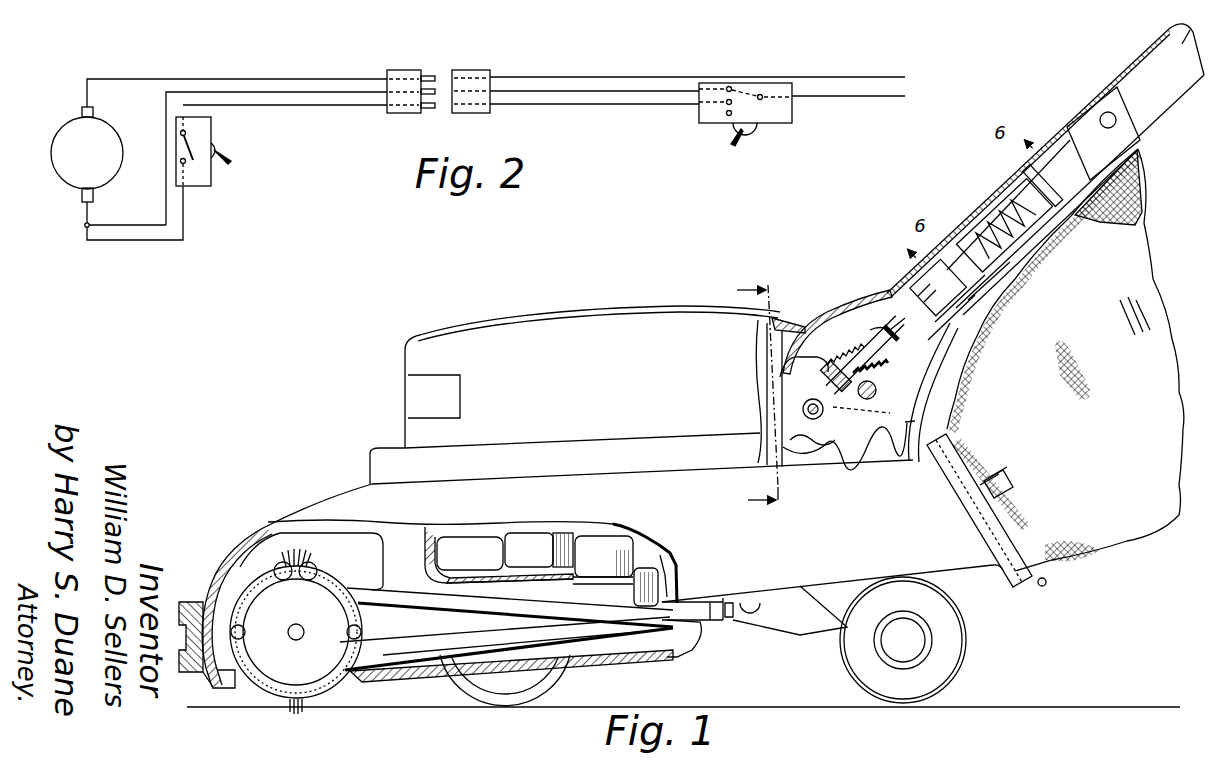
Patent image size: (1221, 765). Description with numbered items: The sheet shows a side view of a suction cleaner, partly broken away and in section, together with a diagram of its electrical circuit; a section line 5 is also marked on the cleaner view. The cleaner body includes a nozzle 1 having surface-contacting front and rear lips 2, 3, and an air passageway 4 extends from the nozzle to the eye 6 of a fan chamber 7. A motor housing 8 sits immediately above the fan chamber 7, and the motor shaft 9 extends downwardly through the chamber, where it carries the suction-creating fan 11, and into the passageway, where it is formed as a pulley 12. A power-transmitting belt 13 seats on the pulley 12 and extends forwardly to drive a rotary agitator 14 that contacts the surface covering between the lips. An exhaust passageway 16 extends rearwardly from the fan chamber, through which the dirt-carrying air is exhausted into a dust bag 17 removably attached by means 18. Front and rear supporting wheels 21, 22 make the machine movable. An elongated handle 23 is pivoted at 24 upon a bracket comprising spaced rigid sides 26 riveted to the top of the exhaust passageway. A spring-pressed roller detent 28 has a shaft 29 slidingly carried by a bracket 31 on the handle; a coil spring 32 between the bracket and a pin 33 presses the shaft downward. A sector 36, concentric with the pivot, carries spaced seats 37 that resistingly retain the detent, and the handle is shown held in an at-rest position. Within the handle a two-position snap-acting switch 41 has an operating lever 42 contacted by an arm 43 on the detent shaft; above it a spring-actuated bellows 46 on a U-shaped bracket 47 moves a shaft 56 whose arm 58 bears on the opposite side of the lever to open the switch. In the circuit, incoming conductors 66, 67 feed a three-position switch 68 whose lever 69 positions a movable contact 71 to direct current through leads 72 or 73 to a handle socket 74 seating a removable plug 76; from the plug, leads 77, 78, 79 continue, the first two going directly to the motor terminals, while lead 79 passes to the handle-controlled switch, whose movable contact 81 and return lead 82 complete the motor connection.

In FIG. 1, the nozzle 1 is at (237, 543).
In FIG. 1, the front lip 2 is at (216, 690).
In FIG. 1, the rear lip 3 is at (360, 688).
In FIG. 1, the air passageway 4 is at (506, 629).
In FIG. 1, the section line 5- 5 is at (747, 396).
In FIG. 1, the eye 6 is at (603, 590).
In FIG. 1, the fan chamber 7 is at (455, 578).
In FIG. 1, the motor housing 8 is at (603, 330).
In FIG. 1, the shaft 9 is at (658, 580).
In FIG. 1, the suction-creating fan 11 is at (578, 545).
In FIG. 1, the pulley 12 is at (678, 650).
In FIG. 1, the power-transmitting belt 13 is at (586, 648).
In FIG. 1, the rotary agitator 14 is at (296, 631).
In FIG. 1, the exhaust passageway 16 is at (686, 479).
In FIG. 1, the dust bag 17 is at (1065, 360).
In FIG. 1, the attaching means 18 is at (1012, 490).
In FIG. 1, the front supporting wheel 21 is at (458, 690).
In FIG. 1, the rear supporting wheel 22 is at (966, 642).
In FIG. 1, the handle 23 is at (1152, 44).
In FIG. 1, the pivot 24 is at (877, 390).
In FIG. 1, the bracket sides 26 is at (912, 413).
In FIG. 1, the roller detent 28 is at (803, 409).
In FIG. 1, the detent shaft 29 is at (872, 315).
In FIG. 1, the bracket 31 is at (820, 322).
In FIG. 1, the coil spring 32 is at (850, 360).
In FIG. 1, the pin 33 is at (861, 419).
In FIG. 1, the sector 36 is at (790, 443).
In FIG. 1, the seats 37 is at (790, 378).
In FIG. 2, the snap-acting switch 41 is at (201, 130).
In FIG. 1, the snap-acting switch 41 is at (920, 268).
In FIG. 2, the operating lever 42 is at (228, 158).
In FIG. 1, the operating lever 42 is at (928, 333).
In FIG. 1, the arm 43 is at (920, 350).
In FIG. 1, the expansible bellows 46 is at (1025, 230).
In FIG. 1, the U-shaped bracket 47 is at (1028, 175).
In FIG. 1, the shaft 56 is at (1018, 268).
In FIG. 1, the arm 58 is at (960, 300).
In FIG. 2, the conductor 66 is at (877, 77).
In FIG. 2, the conductor 67 is at (856, 96).
In FIG. 2, the three-position switch 68 is at (781, 123).
In FIG. 2, the operating lever 69 is at (730, 144).
In FIG. 2, the movable contact 71 is at (742, 88).
In FIG. 2, the lead 72 is at (592, 91).
In FIG. 2, the lead 73 is at (602, 104).
In FIG. 2, the handle socket 74 is at (470, 70).
In FIG. 2, the removable plug 76 is at (405, 70).
In FIG. 2, the lead 77 is at (255, 79).
In FIG. 2, the lead 78 is at (290, 92).
In FIG. 2, the lead 79 is at (297, 105).
In FIG. 2, the movable contact 81 is at (176, 143).
In FIG. 2, the lead 82 is at (155, 240).